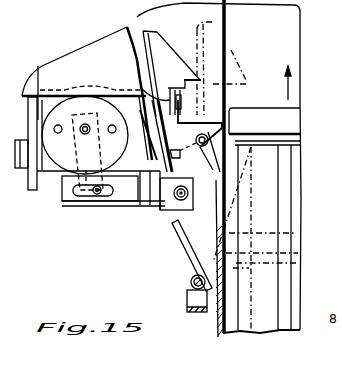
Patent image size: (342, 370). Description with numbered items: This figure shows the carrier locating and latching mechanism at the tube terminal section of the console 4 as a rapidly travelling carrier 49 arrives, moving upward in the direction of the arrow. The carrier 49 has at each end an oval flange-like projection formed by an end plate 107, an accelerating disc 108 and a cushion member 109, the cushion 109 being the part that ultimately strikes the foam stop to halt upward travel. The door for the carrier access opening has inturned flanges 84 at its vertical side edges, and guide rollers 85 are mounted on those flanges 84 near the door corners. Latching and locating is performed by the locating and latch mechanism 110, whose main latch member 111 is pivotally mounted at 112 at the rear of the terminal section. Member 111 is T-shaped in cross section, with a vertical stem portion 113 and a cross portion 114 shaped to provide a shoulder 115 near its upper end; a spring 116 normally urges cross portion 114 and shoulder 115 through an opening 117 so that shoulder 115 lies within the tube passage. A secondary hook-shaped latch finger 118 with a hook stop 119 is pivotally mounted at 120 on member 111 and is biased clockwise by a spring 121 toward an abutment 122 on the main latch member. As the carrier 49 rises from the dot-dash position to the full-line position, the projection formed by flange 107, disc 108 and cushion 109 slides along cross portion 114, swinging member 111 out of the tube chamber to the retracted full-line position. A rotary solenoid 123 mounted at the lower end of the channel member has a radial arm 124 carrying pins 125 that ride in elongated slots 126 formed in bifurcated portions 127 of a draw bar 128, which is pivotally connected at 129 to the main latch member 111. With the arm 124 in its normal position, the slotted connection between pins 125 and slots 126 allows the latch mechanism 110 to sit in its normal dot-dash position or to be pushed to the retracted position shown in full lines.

The housing 4 is at (289, 37).
The carrier 49 is at (301, 118).
The guide rollers 85 is at (334, 61).
The inturned flanges 84 is at (332, 242).
The end plate 107 is at (292, 147).
The accelerating disc 108 is at (292, 136).
The cushion member 109 is at (259, 120).
The locating and latch mechanism 110 is at (183, 247).
The main latch member 111 is at (178, 212).
The pivotal mounting 112 is at (190, 291).
The vertical stem portion 113 is at (209, 230).
The cross portion 114 is at (224, 207).
The shoulder 115 is at (210, 115).
The spring 116 is at (214, 320).
The opening 117 is at (224, 279).
The secondary hook-shaped latch finger 118 is at (127, 27).
The hook stop 119 is at (200, 80).
The pivotal mounting 120 is at (195, 152).
The spring 121 is at (226, 168).
The abutment 122 is at (142, 90).
The rotary solenoid 123 is at (62, 157).
The radial arm 124 is at (96, 201).
The pins 125 is at (105, 178).
The elongated slots 126 is at (88, 196).
The bifurcated portions 127 is at (125, 185).
The draw bar 128 is at (147, 205).
The pivotal connection 129 is at (224, 193).